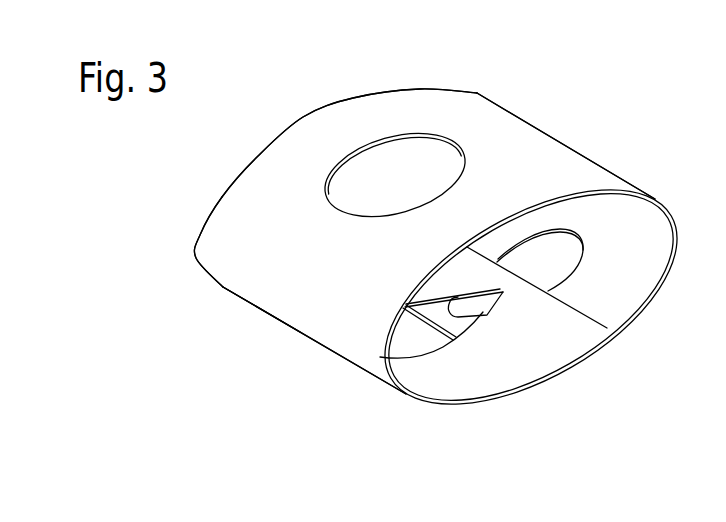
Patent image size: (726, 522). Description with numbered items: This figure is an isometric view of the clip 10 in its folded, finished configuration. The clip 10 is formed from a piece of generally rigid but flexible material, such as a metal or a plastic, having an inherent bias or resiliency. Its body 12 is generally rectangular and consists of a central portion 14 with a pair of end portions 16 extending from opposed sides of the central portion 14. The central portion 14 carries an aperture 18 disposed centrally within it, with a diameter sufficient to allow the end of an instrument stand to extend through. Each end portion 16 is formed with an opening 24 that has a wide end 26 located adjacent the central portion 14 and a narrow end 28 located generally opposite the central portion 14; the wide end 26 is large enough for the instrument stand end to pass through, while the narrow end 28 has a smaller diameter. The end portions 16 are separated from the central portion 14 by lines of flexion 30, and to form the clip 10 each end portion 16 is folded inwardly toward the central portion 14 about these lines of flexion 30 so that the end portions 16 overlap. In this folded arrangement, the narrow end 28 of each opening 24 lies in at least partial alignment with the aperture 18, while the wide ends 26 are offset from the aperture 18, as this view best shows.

The clip 10 is at (272, 94).
The body 12 is at (222, 290).
The central portion 14 is at (253, 185).
The end portions 16 is at (617, 282).
The aperture 18 is at (417, 162).
The opening 24 is at (563, 254).
The wide end 26 is at (557, 230).
The narrow end 28 is at (505, 295).
The lines of flexion 30 is at (572, 151).